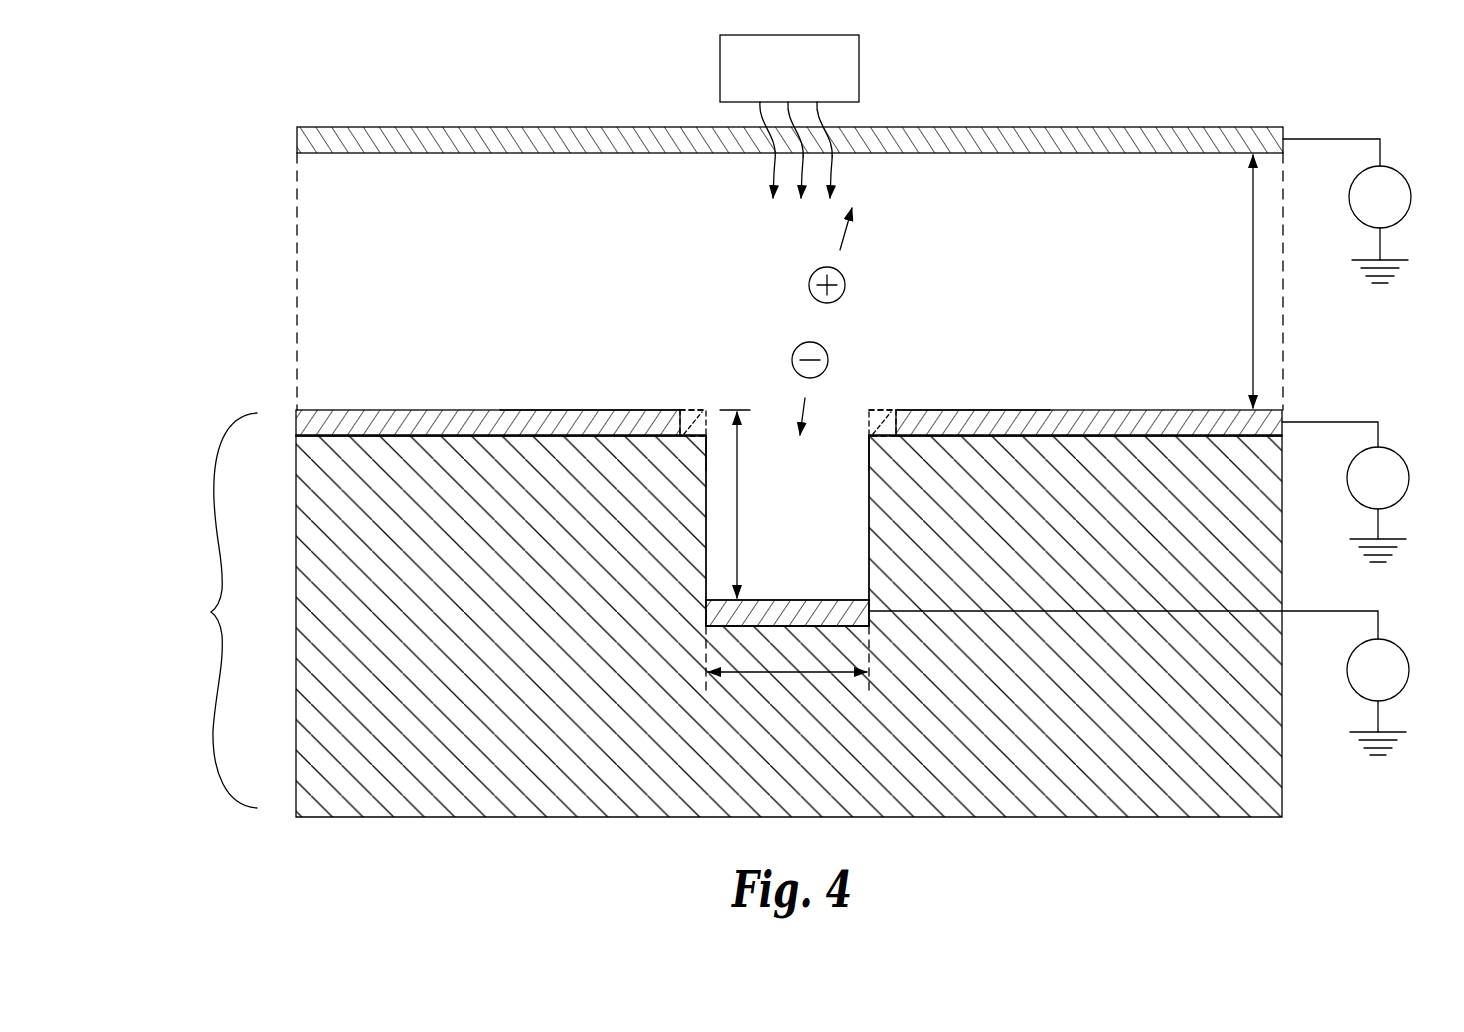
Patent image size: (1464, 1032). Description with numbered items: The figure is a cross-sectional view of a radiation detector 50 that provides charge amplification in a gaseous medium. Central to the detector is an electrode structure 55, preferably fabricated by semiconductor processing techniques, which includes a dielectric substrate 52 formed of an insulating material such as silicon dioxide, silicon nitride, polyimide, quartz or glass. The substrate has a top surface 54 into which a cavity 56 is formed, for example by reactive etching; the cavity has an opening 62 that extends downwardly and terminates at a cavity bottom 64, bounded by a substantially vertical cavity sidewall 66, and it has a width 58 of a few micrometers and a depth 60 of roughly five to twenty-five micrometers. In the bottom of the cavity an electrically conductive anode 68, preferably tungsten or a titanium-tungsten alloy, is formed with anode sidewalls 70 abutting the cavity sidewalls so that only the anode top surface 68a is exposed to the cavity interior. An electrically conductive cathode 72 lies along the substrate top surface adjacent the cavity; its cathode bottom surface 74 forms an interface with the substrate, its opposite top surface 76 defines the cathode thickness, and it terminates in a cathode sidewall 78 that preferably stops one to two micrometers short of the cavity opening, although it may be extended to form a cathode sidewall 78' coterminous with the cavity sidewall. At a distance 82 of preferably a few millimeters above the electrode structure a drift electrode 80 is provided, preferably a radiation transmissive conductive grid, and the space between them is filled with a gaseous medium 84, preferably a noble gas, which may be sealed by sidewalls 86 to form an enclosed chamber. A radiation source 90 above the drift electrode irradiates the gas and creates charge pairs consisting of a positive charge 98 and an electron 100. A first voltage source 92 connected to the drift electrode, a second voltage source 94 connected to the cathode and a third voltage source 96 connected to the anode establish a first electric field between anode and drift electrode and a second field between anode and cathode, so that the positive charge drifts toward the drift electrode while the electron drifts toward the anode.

The radiation detector 50 is at (264, 94).
The dielectric substrate 52 is at (296, 690).
The top surface 54 is at (760, 418).
The electrode structure 55 is at (728, 580).
The cavity 56 is at (706, 492).
The width 58 is at (787, 666).
The depth 60 is at (743, 504).
The opening 62 is at (706, 437).
The cavity bottom 64 is at (706, 609).
The cavity sidewall 66 is at (869, 488).
The anode 68 is at (785, 600).
The anode top surface 68a is at (818, 600).
The anode sidewalls 70 is at (706, 604).
The cathode 72 is at (455, 410).
The cathode bottom surface 74 is at (470, 437).
The top surface 76 is at (558, 410).
The cathode sidewall 78 is at (786, 393).
The cathode sidewall 78' is at (788, 377).
The drift electrode 80 is at (1097, 126).
The distance 82 is at (1234, 281).
The gaseous medium 84 is at (462, 270).
The sidewalls 86 is at (297, 265).
The radiation source 90 is at (859, 62).
The voltage source V1 92 is at (1399, 174).
The voltage source V2 94 is at (1398, 458).
The voltage source V3 96 is at (1398, 648).
The positive charge 98 is at (845, 283).
The electron 100 is at (828, 352).